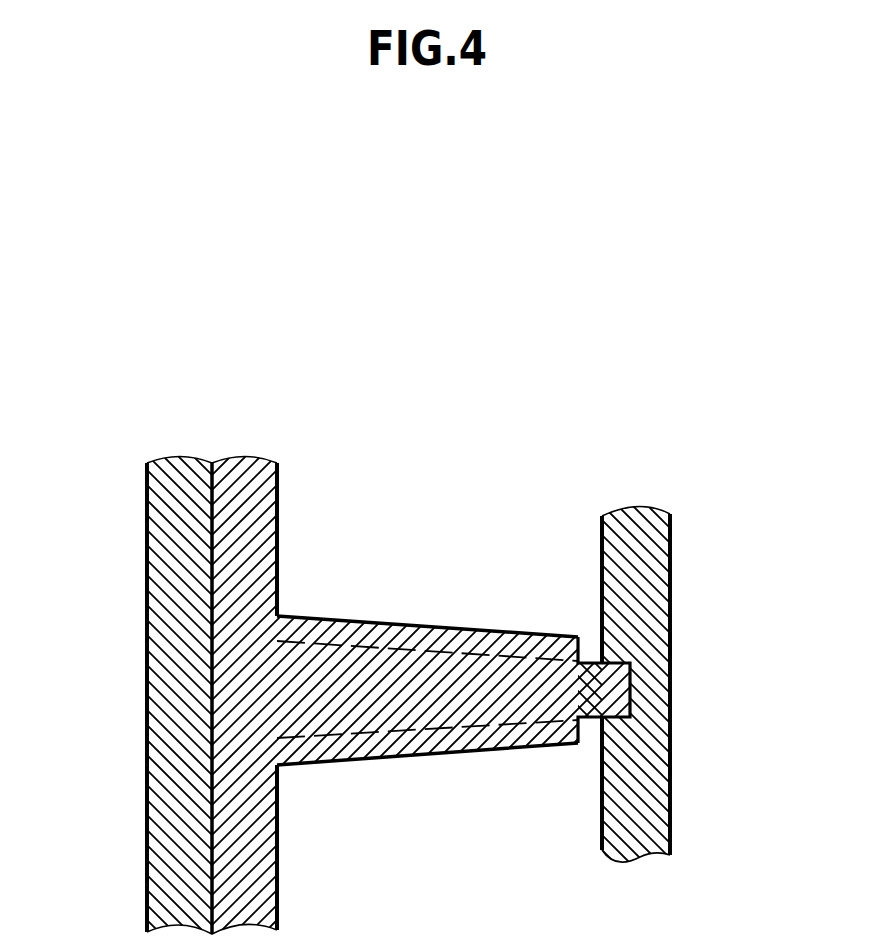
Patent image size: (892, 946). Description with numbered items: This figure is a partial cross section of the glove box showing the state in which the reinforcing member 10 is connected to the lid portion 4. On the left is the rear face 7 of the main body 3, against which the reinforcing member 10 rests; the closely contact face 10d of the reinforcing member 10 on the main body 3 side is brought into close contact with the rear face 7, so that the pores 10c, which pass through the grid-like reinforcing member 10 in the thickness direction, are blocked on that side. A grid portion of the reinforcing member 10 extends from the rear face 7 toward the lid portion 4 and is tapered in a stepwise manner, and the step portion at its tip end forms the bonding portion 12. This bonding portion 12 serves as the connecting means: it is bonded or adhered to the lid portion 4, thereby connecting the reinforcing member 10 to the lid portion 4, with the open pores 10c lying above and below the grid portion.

The main body 3 is at (175, 660).
The lid portion 4 is at (637, 582).
The rear face 7 is at (163, 772).
The reinforcing member 10 is at (446, 695).
The pores 10c is at (490, 592).
The closely contact face 10d is at (258, 877).
The bonding portion 12 is at (628, 684).